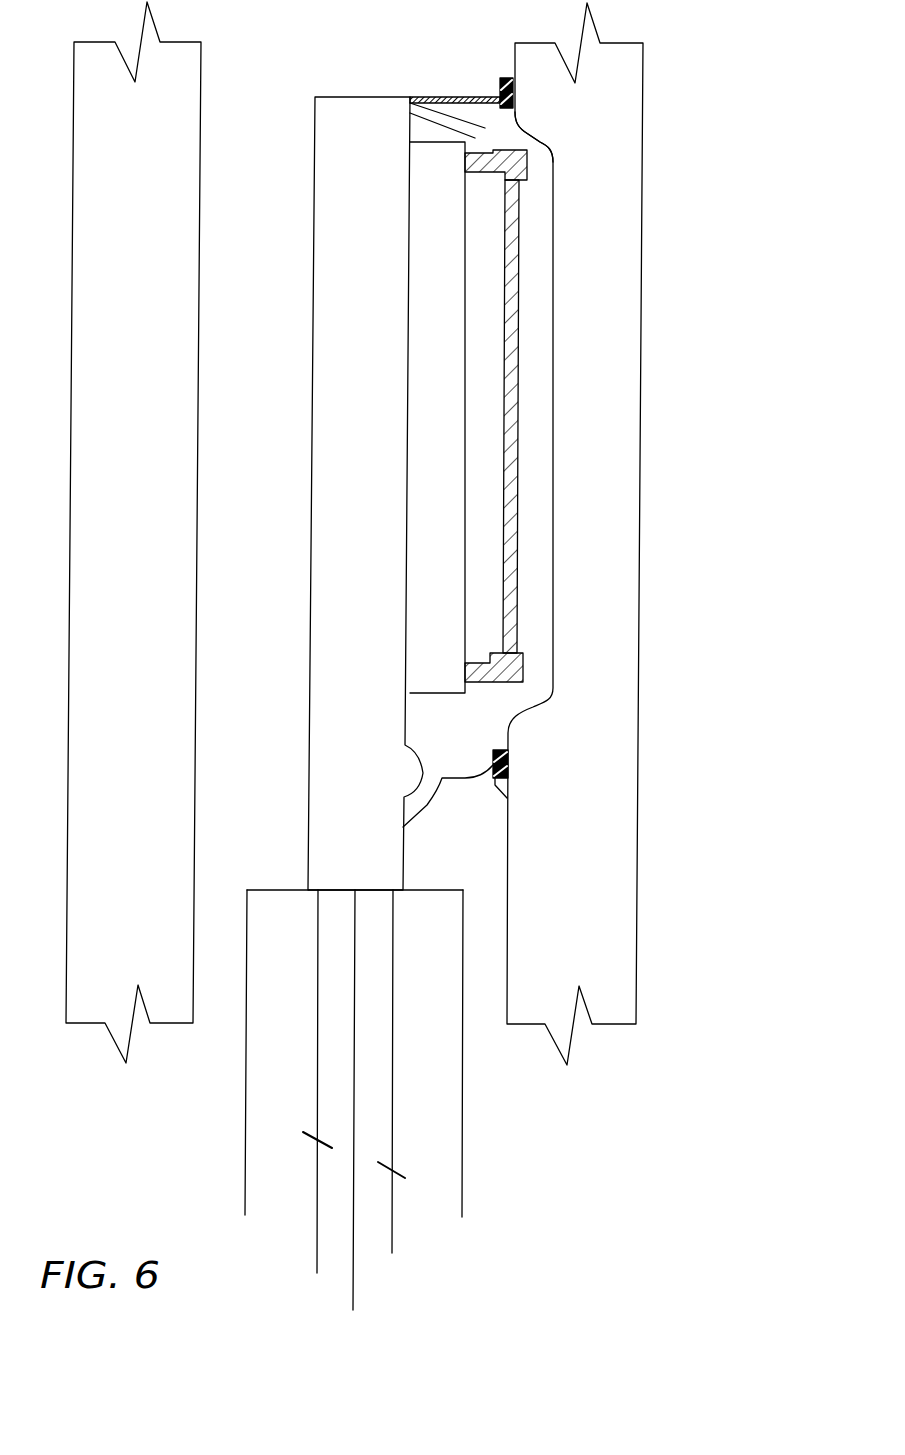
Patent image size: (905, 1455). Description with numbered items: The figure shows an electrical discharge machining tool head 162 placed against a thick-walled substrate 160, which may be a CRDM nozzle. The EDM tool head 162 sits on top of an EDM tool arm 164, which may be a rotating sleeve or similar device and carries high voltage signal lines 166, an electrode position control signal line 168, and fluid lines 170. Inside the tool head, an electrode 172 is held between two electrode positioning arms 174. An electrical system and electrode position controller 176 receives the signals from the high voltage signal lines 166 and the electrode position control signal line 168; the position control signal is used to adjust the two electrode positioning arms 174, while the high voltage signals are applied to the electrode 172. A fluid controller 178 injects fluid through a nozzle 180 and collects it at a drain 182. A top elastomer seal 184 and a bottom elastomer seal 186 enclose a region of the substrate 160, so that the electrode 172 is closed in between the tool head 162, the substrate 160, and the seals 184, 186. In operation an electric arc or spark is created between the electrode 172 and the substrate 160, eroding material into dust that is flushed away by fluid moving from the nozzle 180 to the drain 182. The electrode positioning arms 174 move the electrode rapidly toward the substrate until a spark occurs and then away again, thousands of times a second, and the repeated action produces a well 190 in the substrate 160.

The thick-walled substrate 160 is at (640, 337).
The electrical discharge machining tool head 162 is at (315, 172).
The EDM tool arm 164 is at (462, 1108).
The high voltage signal lines 166 is at (392, 1220).
The electrode position control signal line 168 is at (353, 1273).
The fluid lines 170 is at (315, 1235).
The electrode 172 is at (513, 400).
The electrode positioning arms 174 is at (467, 177).
The electrical system and electrode position controller 176 is at (451, 415).
The fluid controller 178 is at (378, 170).
The nozzle 180 is at (442, 110).
The drain 182 is at (427, 805).
The top elastomer seal 184 is at (440, 97).
The bottom elastomer seal 186 is at (498, 783).
The well 190 is at (540, 150).